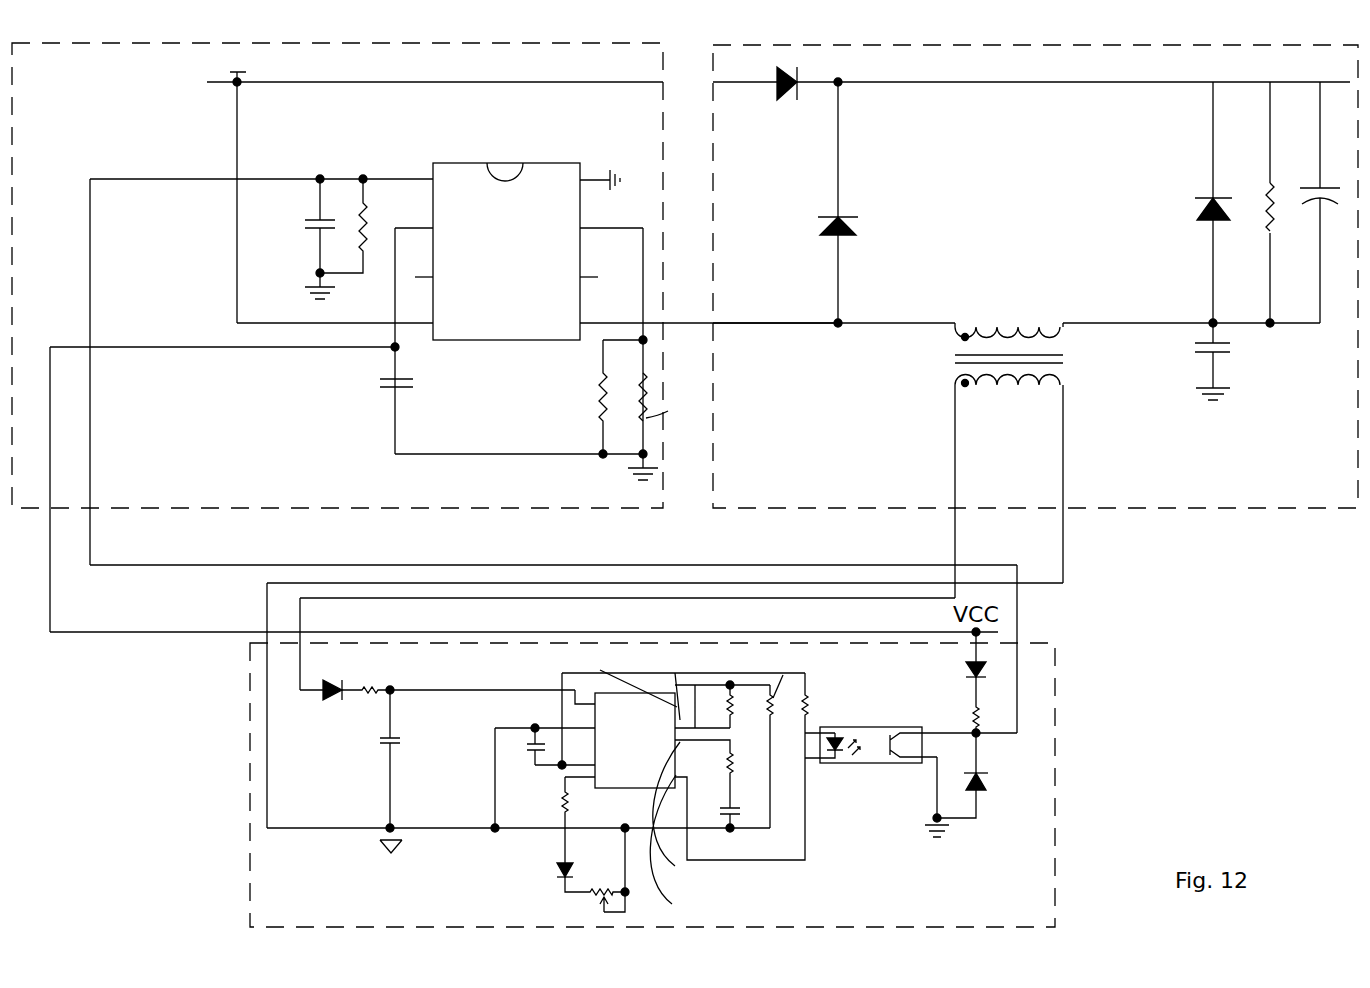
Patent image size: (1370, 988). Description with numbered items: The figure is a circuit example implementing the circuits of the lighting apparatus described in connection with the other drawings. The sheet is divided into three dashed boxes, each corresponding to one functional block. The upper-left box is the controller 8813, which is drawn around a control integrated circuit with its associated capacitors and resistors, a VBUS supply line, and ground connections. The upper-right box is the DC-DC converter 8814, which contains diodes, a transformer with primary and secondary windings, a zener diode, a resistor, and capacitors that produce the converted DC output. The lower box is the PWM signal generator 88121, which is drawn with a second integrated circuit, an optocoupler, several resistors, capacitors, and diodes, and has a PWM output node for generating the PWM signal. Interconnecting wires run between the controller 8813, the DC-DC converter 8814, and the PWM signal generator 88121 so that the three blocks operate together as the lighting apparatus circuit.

The controller 8813 is at (428, 44).
The DC-DC converter 8814 is at (917, 44).
The PWM signal generator 88121 is at (1057, 758).